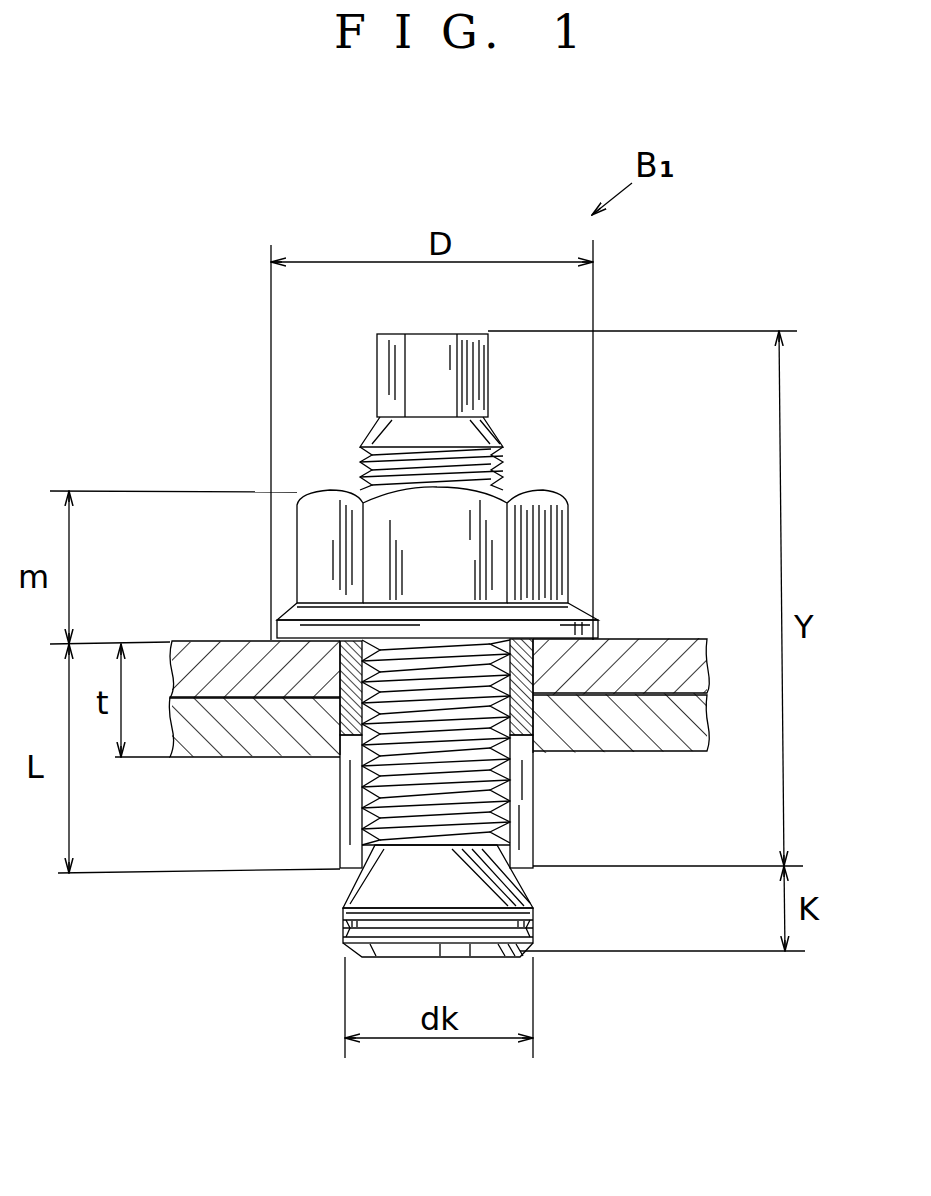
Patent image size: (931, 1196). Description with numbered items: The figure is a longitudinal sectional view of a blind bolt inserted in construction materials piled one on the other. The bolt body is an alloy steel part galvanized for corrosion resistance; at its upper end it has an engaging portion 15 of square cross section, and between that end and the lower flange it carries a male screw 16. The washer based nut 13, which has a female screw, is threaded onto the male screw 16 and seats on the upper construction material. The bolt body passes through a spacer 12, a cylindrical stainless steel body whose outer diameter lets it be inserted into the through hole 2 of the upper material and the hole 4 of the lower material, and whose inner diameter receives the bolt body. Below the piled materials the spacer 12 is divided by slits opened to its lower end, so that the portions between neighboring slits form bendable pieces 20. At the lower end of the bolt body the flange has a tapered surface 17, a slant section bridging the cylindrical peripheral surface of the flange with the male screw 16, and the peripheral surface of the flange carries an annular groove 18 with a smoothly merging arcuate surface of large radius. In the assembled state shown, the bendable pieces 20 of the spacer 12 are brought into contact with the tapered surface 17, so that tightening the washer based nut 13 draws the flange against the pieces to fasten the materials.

The engaging portion 15 is at (390, 378).
The washer based nut 13 is at (310, 520).
The through hole 2 is at (337, 667).
The hole 4 is at (330, 712).
The spacer 12 is at (545, 712).
The bendable pieces 20 is at (350, 822).
The male screw 16 is at (493, 806).
The tapered surface 17 is at (530, 896).
The annular groove 18 is at (533, 926).